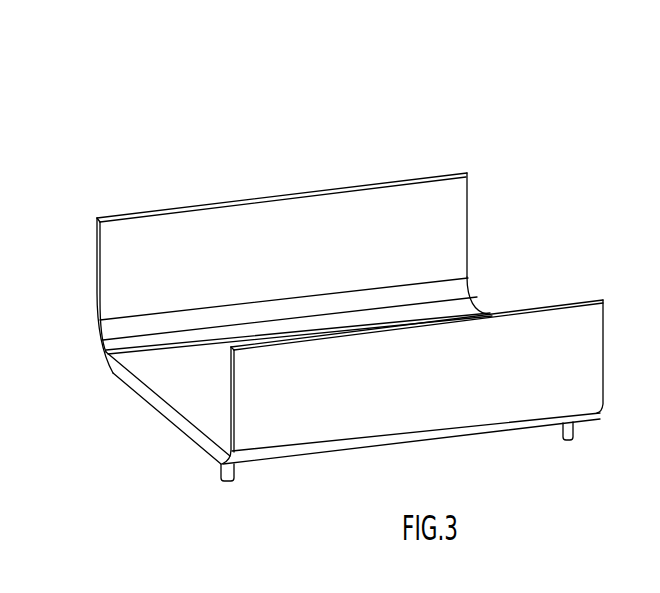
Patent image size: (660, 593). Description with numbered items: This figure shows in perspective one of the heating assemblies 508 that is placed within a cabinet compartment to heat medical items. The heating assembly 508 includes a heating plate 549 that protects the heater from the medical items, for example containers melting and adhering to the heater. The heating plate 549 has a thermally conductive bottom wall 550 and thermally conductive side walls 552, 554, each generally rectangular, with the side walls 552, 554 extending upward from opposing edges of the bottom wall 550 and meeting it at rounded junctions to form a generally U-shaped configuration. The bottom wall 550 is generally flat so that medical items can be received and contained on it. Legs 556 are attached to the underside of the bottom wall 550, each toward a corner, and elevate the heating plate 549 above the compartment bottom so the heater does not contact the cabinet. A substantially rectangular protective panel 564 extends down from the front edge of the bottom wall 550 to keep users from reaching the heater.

The heating assembly 508 is at (397, 50).
The side wall 554 is at (97, 268).
The heating plate 549 is at (609, 300).
The bottom wall 550 is at (168, 392).
The protective panel 564 is at (158, 412).
The side wall 552 is at (245, 410).
The legs 556 is at (237, 474).